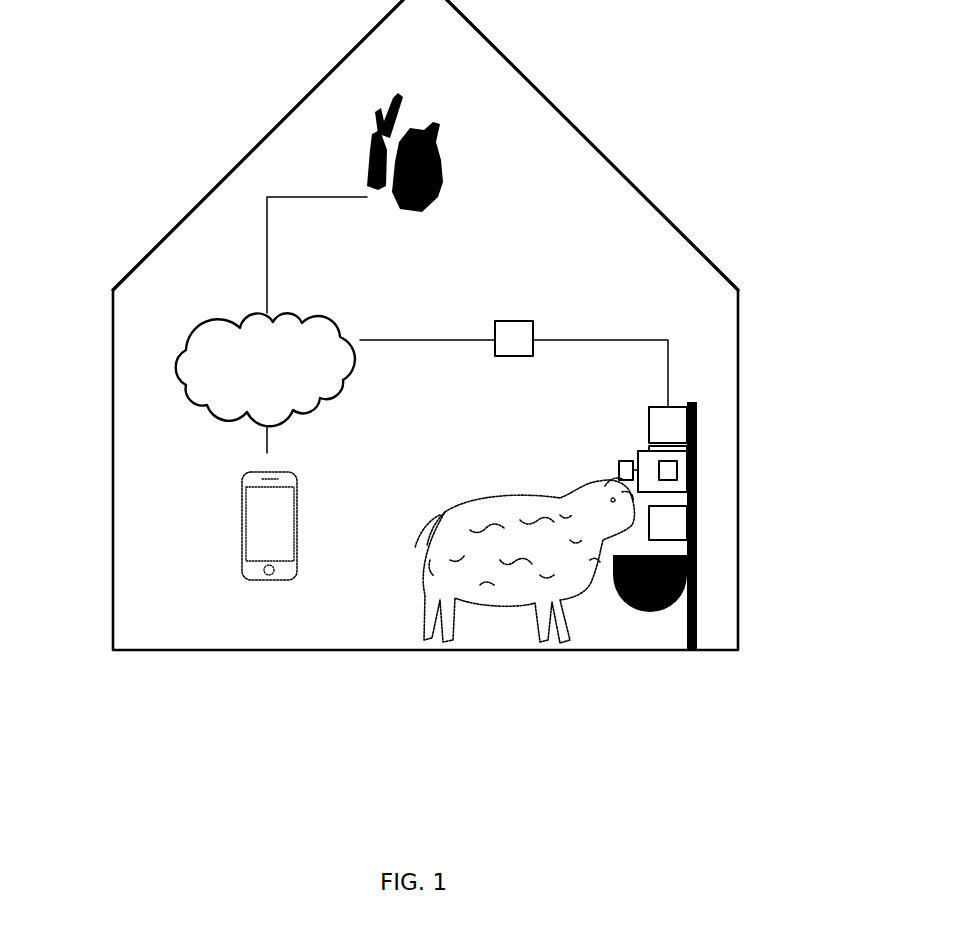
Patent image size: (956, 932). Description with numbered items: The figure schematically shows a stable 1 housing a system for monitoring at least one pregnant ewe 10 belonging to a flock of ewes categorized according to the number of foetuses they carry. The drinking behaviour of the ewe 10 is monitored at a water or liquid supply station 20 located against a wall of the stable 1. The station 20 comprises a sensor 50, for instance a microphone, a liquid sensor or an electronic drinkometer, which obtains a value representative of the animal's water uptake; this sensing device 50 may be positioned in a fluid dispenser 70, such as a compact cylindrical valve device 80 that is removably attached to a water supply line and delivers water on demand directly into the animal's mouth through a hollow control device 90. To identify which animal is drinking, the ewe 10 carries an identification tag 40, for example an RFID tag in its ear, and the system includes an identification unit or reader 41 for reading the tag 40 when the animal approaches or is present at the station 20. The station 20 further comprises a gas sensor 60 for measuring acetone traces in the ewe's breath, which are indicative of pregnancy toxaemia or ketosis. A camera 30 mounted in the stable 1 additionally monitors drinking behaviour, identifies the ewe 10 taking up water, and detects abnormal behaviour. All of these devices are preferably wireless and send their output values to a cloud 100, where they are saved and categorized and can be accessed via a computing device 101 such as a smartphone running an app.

The stable 1 is at (176, 157).
The pregnant ewe 10 is at (540, 580).
The water or liquid supply station 20 is at (694, 602).
The camera 30 is at (440, 150).
The identification tag 40 is at (580, 497).
The identification unit (reader) 41 is at (667, 420).
The sensor (sensing device) 50 is at (667, 472).
The gas sensor 60 is at (667, 526).
The fluid dispenser 70 is at (517, 338).
The cylindrical valve device 80 is at (654, 457).
The hollow control device 90 is at (619, 470).
The cloud 100 is at (265, 369).
The computing device 101 is at (266, 527).